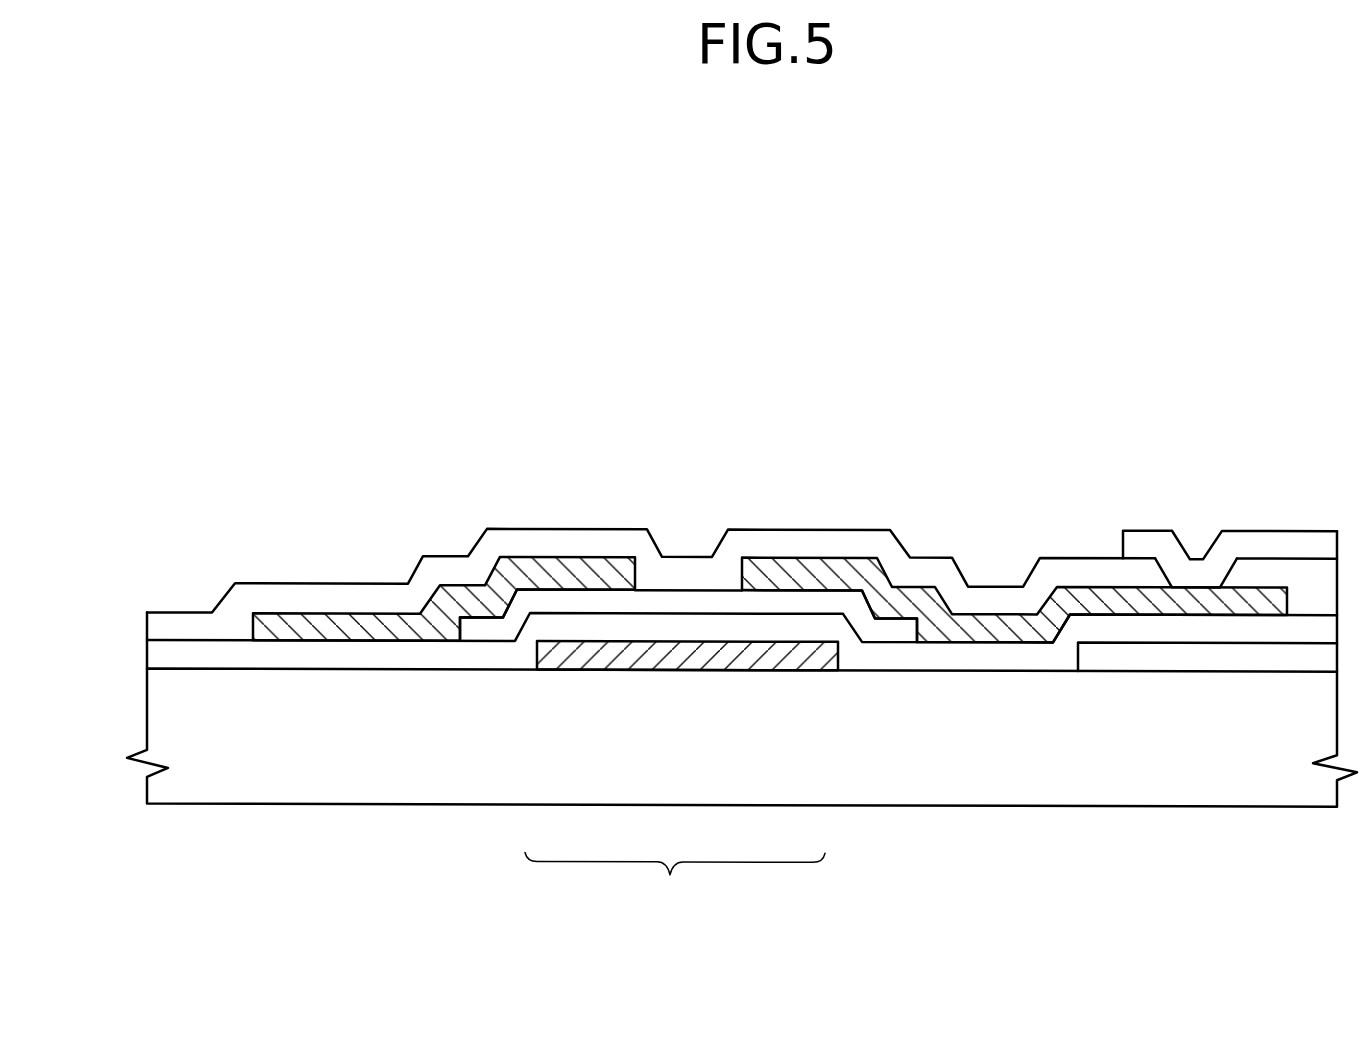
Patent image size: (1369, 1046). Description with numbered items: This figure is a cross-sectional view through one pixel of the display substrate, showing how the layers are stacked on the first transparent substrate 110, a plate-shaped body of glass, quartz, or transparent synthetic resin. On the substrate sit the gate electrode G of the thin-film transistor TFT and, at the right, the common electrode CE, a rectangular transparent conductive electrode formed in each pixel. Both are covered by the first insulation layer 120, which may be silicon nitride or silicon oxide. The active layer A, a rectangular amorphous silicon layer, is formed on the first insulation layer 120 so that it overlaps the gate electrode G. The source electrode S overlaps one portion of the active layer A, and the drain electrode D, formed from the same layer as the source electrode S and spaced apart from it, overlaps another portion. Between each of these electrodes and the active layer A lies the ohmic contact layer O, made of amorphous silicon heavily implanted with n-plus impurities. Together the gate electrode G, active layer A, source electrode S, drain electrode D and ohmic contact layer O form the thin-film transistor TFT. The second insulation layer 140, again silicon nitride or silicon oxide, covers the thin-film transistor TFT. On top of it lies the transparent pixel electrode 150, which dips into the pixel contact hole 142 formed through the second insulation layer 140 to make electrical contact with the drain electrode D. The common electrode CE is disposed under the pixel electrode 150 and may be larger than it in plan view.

The first transparent substrate 110 is at (158, 690).
The first insulation layer 120 is at (158, 652).
The second insulation layer 140 is at (158, 624).
The pixel contact hole 142 is at (1172, 582).
The pixel electrode 150 is at (1289, 534).
The source electrode S is at (550, 572).
The active layer A is at (595, 602).
The gate electrode G is at (683, 653).
The drain electrode D is at (767, 566).
The ohmic contact layer O is at (815, 588).
The common electrode CE is at (1155, 654).
The thin-film transistor TFT is at (675, 883).